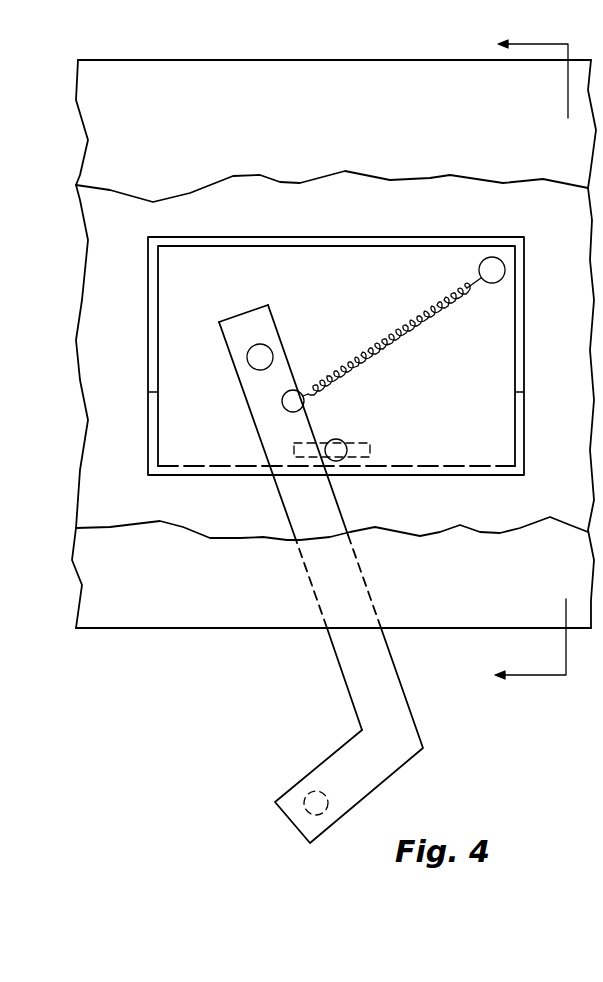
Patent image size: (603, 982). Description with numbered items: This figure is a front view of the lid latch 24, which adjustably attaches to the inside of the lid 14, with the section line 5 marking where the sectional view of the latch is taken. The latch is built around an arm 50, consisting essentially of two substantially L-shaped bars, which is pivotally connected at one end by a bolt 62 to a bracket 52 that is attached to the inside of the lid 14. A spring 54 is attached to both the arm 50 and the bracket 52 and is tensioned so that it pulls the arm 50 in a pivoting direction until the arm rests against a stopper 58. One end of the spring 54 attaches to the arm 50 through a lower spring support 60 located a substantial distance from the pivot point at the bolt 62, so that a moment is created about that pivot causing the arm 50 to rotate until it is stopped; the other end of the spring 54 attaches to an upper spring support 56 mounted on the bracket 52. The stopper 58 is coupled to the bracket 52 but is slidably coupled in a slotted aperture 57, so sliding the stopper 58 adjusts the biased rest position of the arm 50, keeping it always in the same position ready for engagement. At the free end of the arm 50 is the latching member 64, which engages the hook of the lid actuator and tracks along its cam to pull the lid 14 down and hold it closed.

The section line 5- 5 is at (525, 360).
The lid 14 is at (152, 138).
The lid latch 24 is at (328, 216).
The arm 50 is at (403, 731).
The bracket 52 is at (468, 465).
The spring 54 is at (396, 338).
The upper spring support 56 is at (492, 272).
The slotted aperture 57 is at (366, 444).
The stopper 58 is at (337, 444).
The lower spring support 60 is at (300, 400).
The bolt 62 is at (262, 352).
The latching member 64 is at (313, 790).